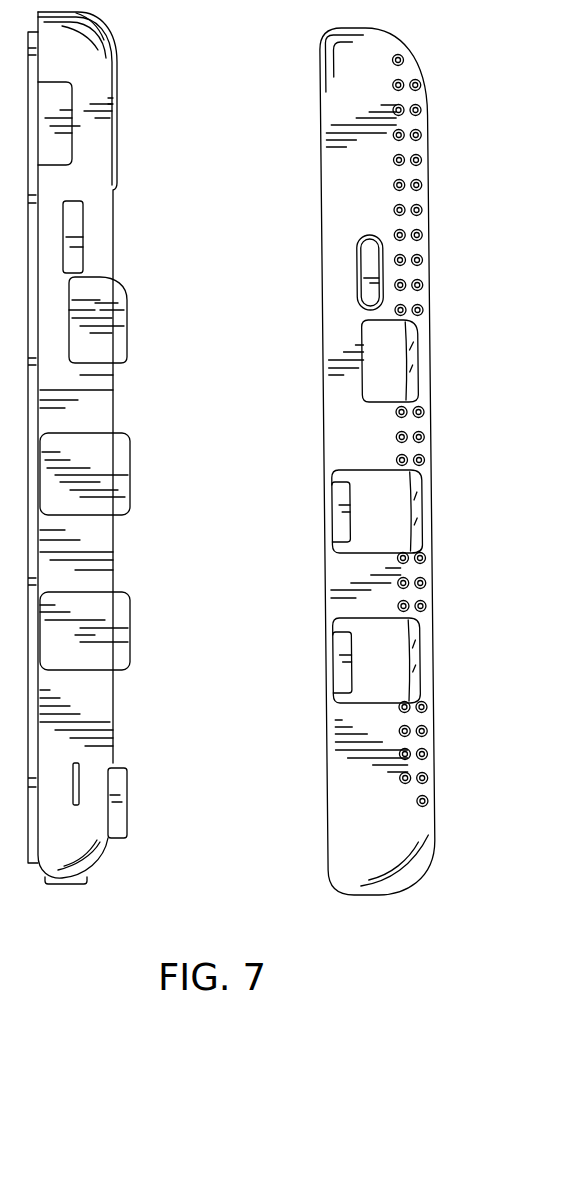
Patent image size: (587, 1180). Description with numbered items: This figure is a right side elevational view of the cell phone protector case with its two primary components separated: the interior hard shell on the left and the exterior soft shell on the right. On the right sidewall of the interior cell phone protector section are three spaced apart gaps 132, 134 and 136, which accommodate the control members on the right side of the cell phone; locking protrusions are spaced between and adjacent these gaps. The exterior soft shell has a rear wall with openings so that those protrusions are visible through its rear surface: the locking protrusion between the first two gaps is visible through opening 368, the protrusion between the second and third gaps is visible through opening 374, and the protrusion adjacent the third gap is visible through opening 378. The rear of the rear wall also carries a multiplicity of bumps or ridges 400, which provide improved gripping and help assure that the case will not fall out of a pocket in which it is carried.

The gap 132 is at (105, 323).
The gap 134 is at (105, 477).
The gap 136 is at (105, 624).
The bumps or ridges 400 is at (400, 263).
The opening 368 is at (401, 363).
The opening 374 is at (395, 510).
The opening 378 is at (394, 654).